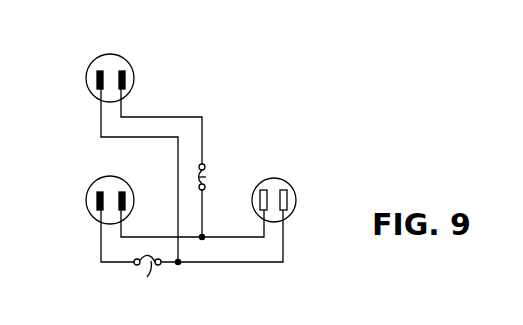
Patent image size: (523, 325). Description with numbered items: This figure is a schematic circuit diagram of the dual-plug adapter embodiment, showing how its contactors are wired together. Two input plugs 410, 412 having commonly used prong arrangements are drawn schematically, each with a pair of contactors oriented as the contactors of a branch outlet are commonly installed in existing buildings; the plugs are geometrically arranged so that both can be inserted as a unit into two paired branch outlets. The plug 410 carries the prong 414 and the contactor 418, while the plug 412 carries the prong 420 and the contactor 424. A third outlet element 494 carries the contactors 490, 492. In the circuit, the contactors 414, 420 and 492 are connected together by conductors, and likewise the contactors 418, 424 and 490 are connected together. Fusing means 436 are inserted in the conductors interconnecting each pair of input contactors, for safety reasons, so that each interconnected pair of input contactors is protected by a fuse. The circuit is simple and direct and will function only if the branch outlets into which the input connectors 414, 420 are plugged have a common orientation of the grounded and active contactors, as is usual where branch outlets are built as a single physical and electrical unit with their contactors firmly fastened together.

The plug 410 is at (108, 52).
The prong 414 is at (93, 72).
The contactor 418 is at (127, 72).
The plug 412 is at (108, 174).
The prong 420 is at (95, 208).
The contactor 424 is at (126, 208).
The fusing means 436 is at (206, 177).
The third gas discharge tube 494 is at (272, 175).
The contactor 490 is at (258, 207).
The contactor 492 is at (289, 207).